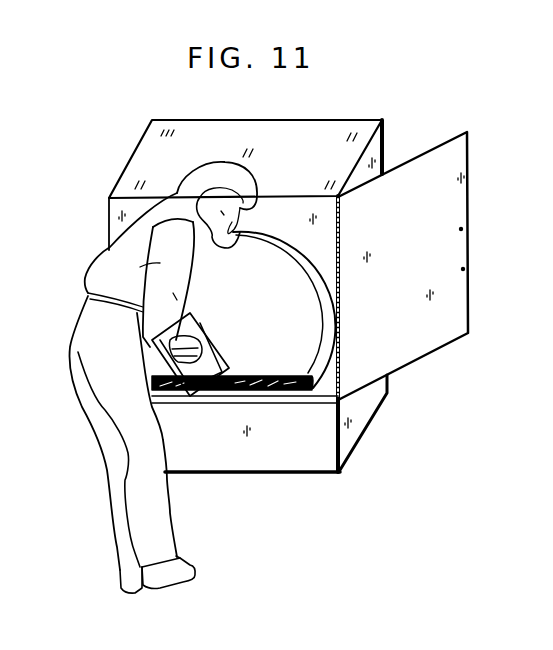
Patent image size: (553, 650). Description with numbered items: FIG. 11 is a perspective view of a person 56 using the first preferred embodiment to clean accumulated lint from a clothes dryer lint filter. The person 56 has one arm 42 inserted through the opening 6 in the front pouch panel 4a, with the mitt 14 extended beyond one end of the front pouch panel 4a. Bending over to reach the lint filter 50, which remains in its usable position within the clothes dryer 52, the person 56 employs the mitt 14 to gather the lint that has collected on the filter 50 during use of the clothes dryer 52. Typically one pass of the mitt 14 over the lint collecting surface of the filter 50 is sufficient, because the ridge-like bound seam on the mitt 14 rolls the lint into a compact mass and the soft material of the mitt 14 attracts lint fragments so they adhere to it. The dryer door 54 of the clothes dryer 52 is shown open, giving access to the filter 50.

The front pouch panel 4a is at (204, 326).
The opening 6 is at (229, 367).
The mitt 14 is at (242, 382).
The arm 42 is at (110, 247).
The lint filter 50 is at (293, 393).
The clothes dryer 52 is at (378, 150).
The dryer door 54 is at (461, 200).
The person 56 is at (127, 462).